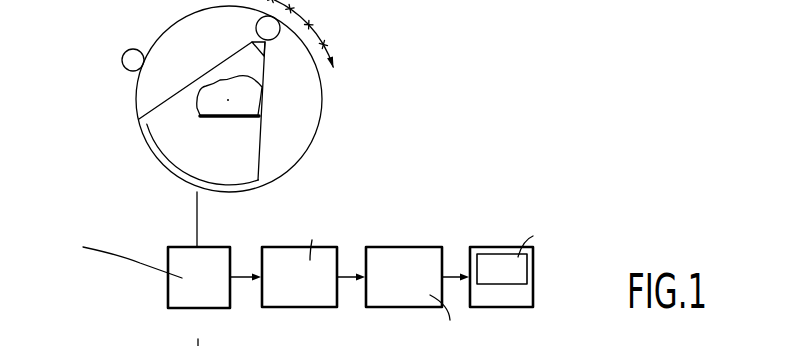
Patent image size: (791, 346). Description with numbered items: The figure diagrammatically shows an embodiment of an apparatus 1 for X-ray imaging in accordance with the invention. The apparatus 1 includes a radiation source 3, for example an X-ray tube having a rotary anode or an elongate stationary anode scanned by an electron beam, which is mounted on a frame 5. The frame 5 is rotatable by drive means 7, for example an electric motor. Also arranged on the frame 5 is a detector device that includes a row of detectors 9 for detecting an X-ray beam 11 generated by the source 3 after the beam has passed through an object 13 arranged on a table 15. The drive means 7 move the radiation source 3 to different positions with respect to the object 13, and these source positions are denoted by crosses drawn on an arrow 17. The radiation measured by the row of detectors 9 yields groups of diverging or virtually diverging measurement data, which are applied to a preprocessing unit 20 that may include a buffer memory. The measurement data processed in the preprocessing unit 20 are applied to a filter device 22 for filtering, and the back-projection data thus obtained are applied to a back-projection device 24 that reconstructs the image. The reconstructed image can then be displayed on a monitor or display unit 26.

The apparatus 1 is at (337, 178).
The radiation source 3 is at (256, 27).
The frame 5 is at (322, 100).
The drive means 7 is at (127, 50).
The row of detectors 9 is at (154, 141).
The X-ray beam 11 is at (193, 151).
The object 13 is at (257, 94).
The table 15 is at (237, 119).
The arrow 17 is at (334, 52).
The preprocessing unit 20 is at (218, 247).
The filter device 22 is at (278, 247).
The back-projection device 24 is at (392, 247).
The display unit 26 is at (493, 247).